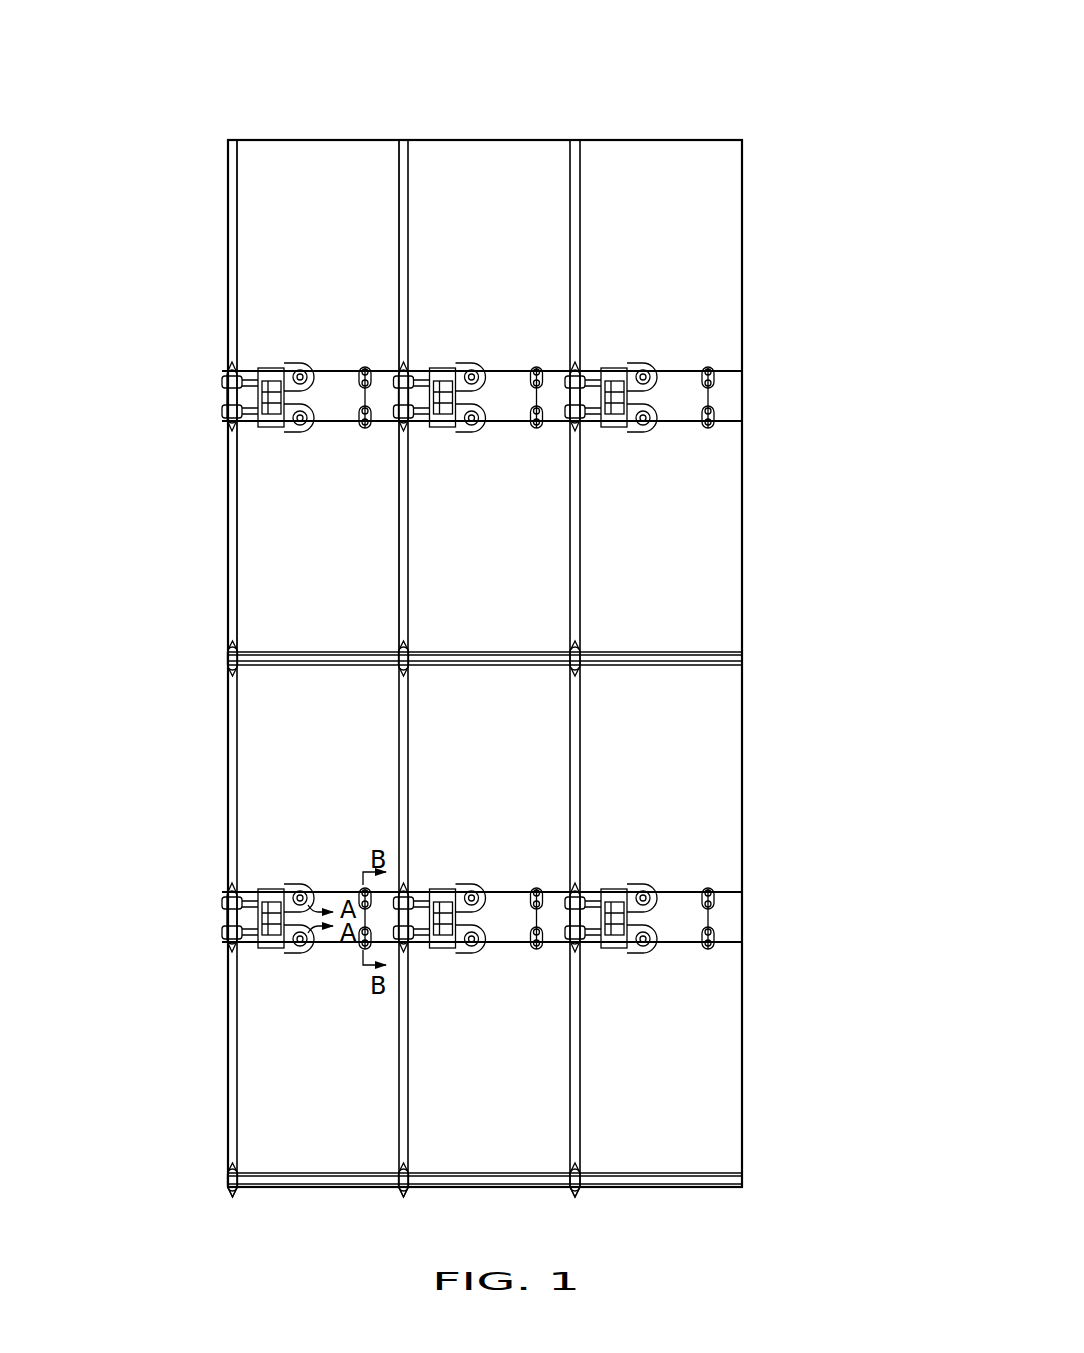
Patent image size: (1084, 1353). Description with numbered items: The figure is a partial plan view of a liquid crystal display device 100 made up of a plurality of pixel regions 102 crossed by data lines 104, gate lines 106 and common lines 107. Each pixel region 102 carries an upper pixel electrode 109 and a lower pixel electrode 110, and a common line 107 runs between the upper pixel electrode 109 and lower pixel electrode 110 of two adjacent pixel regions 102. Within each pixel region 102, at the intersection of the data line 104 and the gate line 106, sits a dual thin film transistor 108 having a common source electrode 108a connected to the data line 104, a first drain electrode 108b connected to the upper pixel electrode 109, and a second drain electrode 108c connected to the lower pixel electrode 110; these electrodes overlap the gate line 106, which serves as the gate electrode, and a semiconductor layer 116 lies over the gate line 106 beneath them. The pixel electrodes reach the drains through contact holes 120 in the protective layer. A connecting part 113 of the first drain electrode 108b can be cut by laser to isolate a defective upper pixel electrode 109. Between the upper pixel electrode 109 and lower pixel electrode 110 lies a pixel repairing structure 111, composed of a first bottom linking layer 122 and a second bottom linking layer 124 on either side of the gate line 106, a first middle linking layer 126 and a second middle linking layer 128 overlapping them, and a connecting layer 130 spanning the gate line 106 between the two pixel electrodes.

The liquid crystal display device 100 is at (868, 32).
The pixel region 102 is at (742, 540).
The data line 104 is at (580, 622).
The gate line 106 is at (380, 371).
The common line 107 is at (302, 662).
The dual thin film transistor 108 is at (238, 430).
The common source electrode 108a is at (243, 426).
The first drain electrode 108b is at (252, 369).
The second drain electrode 108c is at (230, 366).
The upper pixel electrode 109 is at (318, 172).
The lower pixel electrode 110 is at (282, 617).
The pixel repairing structure 111 is at (358, 400).
The connecting part 113 is at (277, 368).
The semiconductor layer 116 is at (265, 368).
The contact hole 120 is at (298, 364).
The first bottom linking layer 122 is at (367, 367).
The second bottom linking layer 124 is at (366, 432).
The first middle linking layer 126 is at (360, 368).
The second middle linking layer 128 is at (362, 430).
The connecting layer 130 is at (343, 371).